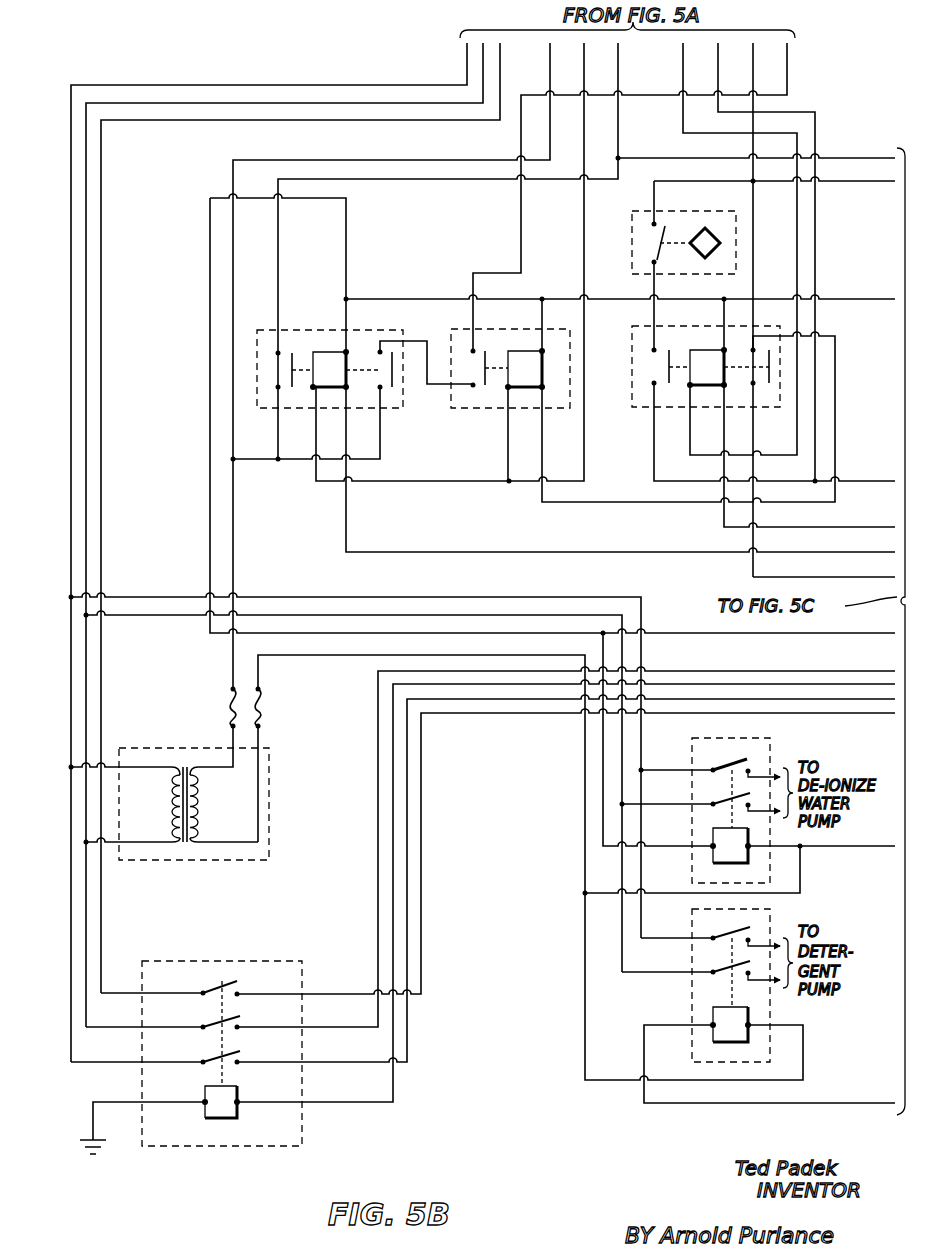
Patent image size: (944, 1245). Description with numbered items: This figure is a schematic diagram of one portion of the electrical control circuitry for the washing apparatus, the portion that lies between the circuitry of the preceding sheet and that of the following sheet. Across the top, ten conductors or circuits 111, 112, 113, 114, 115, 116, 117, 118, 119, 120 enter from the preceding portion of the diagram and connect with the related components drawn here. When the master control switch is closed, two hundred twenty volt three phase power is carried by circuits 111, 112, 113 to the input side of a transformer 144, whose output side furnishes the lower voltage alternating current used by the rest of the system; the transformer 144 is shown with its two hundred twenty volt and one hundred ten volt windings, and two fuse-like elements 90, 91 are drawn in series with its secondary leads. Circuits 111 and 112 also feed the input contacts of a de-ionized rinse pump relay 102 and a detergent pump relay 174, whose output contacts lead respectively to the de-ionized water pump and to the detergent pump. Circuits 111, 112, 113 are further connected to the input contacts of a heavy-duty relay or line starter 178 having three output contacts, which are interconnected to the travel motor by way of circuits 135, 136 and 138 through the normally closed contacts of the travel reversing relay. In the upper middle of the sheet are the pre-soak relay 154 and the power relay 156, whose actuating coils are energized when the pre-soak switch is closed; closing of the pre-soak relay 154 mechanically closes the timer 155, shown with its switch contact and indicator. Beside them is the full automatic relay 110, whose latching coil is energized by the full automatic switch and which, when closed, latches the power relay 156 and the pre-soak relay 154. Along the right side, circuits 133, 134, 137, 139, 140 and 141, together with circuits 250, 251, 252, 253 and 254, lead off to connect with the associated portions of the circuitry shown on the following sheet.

The fuse 90 is at (262, 708).
The fuse 91 is at (231, 708).
The de-ionized rinse pump relay 102 is at (692, 760).
The full automatic relay 110 is at (637, 409).
The circuit 111 is at (467, 63).
The circuit 112 is at (482, 75).
The circuit 113 is at (500, 84).
The circuit 114 is at (550, 84).
The circuit 115 is at (584, 84).
The circuit 116 is at (618, 84).
The circuit 117 is at (683, 84).
The circuit 118 is at (718, 84).
The circuit 119 is at (753, 84).
The circuit 120 is at (787, 84).
The circuit 133 is at (838, 1103).
The circuit 134 is at (884, 846).
The circuit 135 is at (882, 713).
The circuit 136 is at (777, 699).
The circuit 137 is at (739, 684).
The circuit 138 is at (879, 669).
The circuit 139 is at (799, 633).
The circuit 140 is at (833, 577).
The circuit 141 is at (835, 552).
The transformer 144 is at (271, 852).
The pre-soak relay 154 is at (470, 408).
The timer 155 is at (736, 248).
The power relay 156 is at (310, 330).
The detergent pump relay 174 is at (772, 1008).
The heavy-duty relay or line starter 178 is at (196, 961).
The circuit 250 is at (863, 527).
The circuit 251 is at (863, 481).
The circuit 252 is at (854, 298).
The circuit 253 is at (853, 181).
The circuit 254 is at (853, 157).